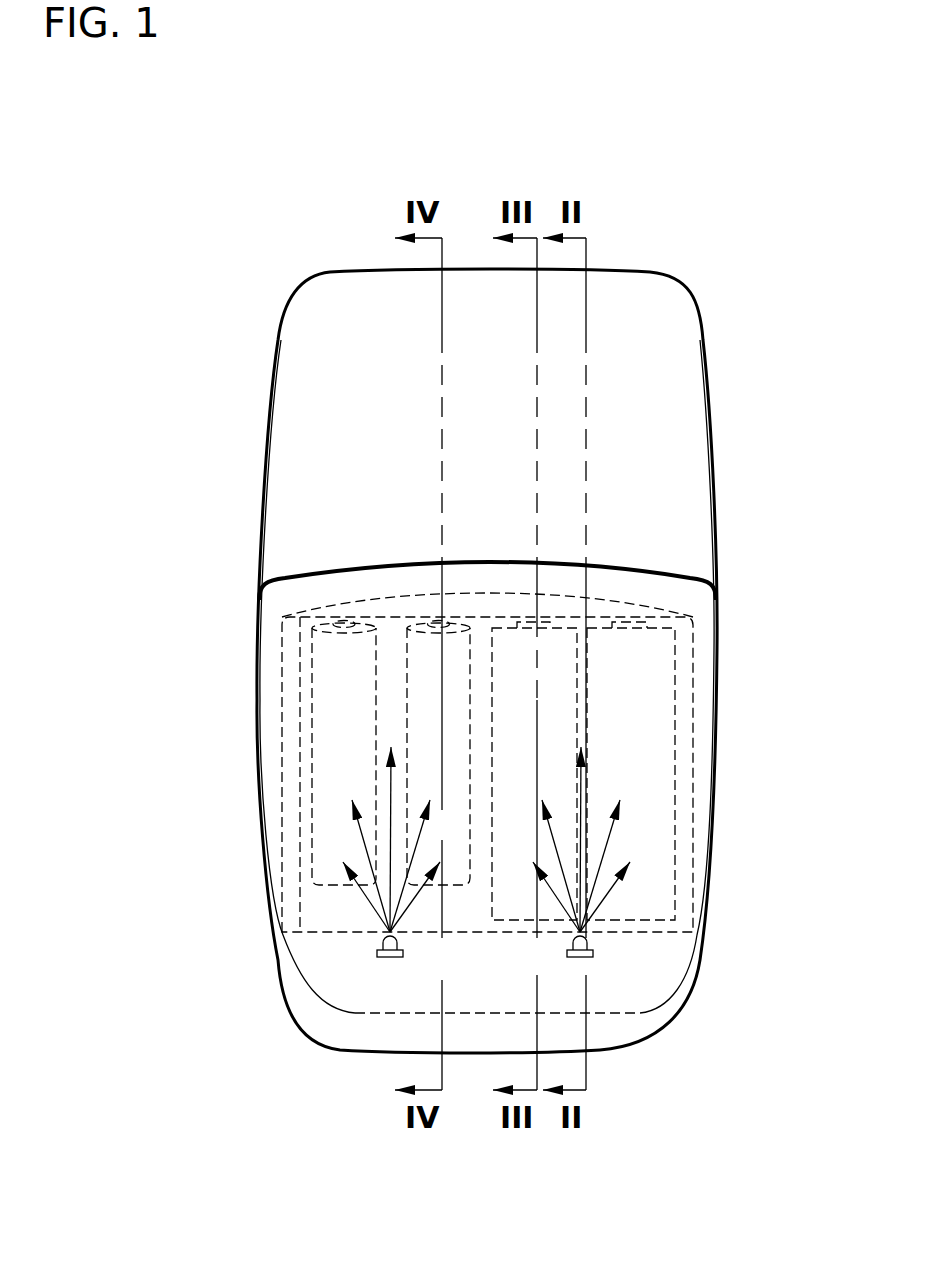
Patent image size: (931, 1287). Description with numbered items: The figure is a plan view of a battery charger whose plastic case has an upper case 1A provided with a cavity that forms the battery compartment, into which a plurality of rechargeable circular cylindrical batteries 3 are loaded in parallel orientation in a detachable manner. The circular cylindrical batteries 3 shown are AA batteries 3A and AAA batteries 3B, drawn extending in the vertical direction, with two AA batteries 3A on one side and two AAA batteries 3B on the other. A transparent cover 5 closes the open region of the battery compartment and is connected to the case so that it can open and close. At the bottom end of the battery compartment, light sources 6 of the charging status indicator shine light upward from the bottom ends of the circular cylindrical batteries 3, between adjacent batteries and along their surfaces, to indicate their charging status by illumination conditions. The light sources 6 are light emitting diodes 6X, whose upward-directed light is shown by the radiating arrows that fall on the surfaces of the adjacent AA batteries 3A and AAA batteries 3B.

The upper case 1A is at (663, 472).
The transparent cover 5 is at (701, 692).
The circular cylindrical batteries 3 is at (165, 612).
The AAA batteries 3B is at (312, 660).
The AA batteries 3A is at (492, 757).
The light sources 6 is at (212, 950).
The light emitting diodes (LEDs) 6X is at (375, 948).